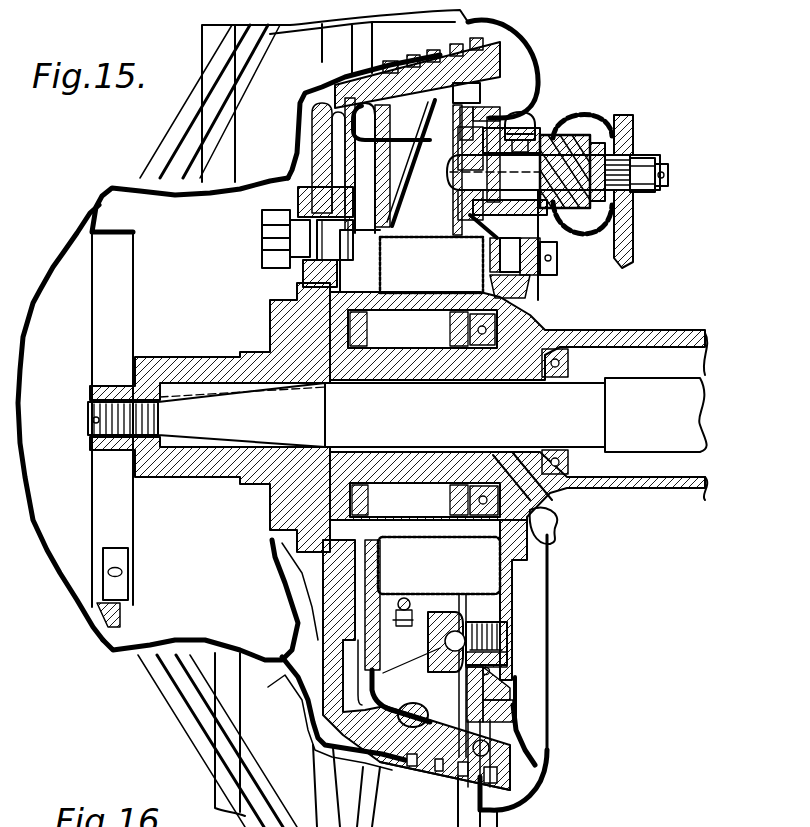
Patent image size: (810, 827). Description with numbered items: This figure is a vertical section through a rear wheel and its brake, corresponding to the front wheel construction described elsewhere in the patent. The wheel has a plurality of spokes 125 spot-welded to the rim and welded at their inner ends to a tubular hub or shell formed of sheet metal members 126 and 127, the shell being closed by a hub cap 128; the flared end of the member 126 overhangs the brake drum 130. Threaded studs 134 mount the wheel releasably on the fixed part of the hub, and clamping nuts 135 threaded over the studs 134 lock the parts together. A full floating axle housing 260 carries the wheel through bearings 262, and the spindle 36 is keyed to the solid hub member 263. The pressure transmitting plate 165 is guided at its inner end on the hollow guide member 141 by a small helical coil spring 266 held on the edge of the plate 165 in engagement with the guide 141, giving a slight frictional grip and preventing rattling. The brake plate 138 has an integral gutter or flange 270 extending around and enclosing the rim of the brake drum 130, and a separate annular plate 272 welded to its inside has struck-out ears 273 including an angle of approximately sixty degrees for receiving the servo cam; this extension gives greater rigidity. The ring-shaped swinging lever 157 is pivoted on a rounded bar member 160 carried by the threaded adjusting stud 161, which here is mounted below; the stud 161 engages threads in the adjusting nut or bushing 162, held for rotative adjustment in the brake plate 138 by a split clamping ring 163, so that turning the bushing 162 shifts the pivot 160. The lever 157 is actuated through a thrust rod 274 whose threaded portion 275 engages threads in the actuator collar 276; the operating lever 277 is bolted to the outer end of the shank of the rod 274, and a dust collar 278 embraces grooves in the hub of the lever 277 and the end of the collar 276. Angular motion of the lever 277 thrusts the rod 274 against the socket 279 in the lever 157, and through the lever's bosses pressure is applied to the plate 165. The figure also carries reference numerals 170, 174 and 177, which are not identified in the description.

The spokes 125 is at (200, 132).
The sheet metal member 126 is at (302, 95).
The cylindrical sheet metal member 127 is at (108, 190).
The hub cap 128 is at (66, 246).
The threaded studs 134 is at (260, 238).
The clamping nuts 135 is at (262, 262).
The socket 279 is at (422, 166).
The thrust rod 274 is at (445, 225).
The ring-shaped lever 157 is at (450, 210).
The dust collar 278 is at (581, 110).
The threaded portion 275 is at (580, 150).
The operating lever 277 is at (634, 239).
The actuator collar 276 is at (549, 224).
The full floating axle housing 260 is at (621, 333).
The spindle 36 is at (690, 412).
The solid hub member 263 is at (218, 472).
The bearings 262 is at (424, 508).
The helical coil spring 266 is at (405, 598).
The hollow guide member 141 is at (461, 607).
The brake plate 138 is at (512, 578).
The rounded bar member 160 is at (448, 642).
The threaded adjusting stud 161 is at (508, 633).
The adjusting nut 162 is at (510, 659).
The split clamping ring 163 is at (491, 672).
The annular plate 272 is at (480, 700).
The ears 273 is at (514, 717).
The gear flange 174 is at (527, 757).
The gear hub 177 is at (517, 771).
The gutter flange 270 is at (533, 788).
The brake drum 130 is at (537, 805).
The pressure transmitting plate 165 is at (410, 700).
The gear teeth 170 is at (435, 772).